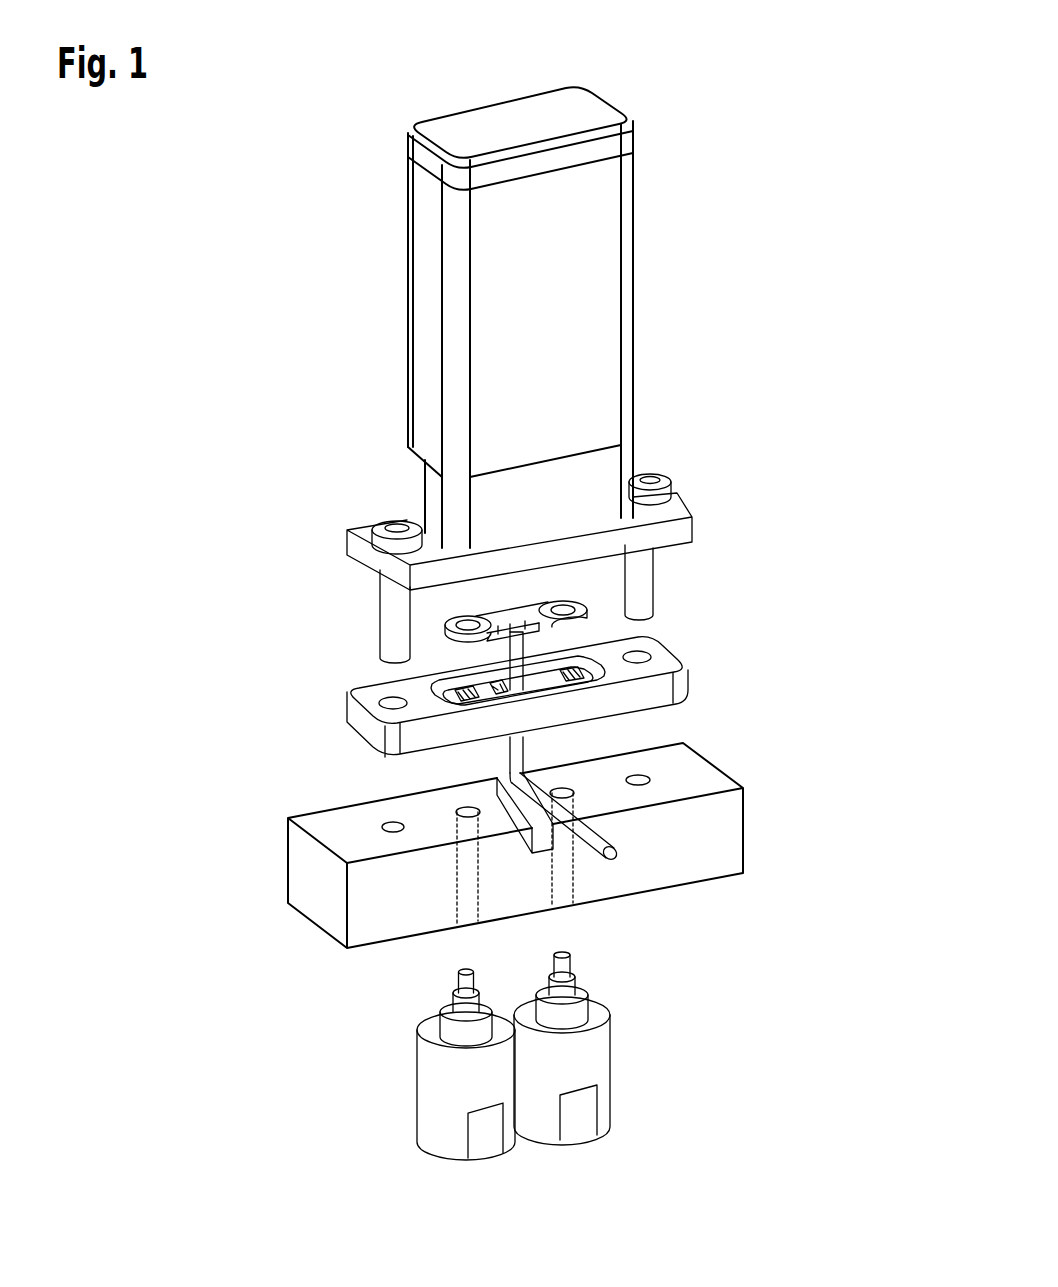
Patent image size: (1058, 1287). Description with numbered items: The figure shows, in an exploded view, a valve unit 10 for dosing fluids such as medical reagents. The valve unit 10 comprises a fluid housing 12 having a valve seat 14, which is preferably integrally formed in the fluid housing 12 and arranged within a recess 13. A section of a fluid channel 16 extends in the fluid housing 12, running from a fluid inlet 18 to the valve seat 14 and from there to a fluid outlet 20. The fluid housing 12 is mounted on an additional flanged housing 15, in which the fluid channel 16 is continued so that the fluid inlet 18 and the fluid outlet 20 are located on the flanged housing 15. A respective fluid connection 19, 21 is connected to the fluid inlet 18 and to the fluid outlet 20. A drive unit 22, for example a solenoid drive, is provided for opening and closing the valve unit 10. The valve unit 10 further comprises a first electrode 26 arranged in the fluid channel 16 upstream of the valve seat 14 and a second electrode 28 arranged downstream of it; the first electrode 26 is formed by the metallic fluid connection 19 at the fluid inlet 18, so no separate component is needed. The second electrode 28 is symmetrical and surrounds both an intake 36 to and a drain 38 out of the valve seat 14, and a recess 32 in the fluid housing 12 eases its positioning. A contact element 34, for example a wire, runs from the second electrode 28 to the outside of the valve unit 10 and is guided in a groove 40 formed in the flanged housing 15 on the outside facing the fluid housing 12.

The valve unit 10 is at (842, 250).
The fluid housing 12 is at (555, 650).
The recess 13 is at (563, 672).
The valve seat 14 is at (470, 675).
The flanged housing 15 is at (482, 872).
The fluid channel 16 is at (467, 867).
The fluid inlet 18 is at (467, 925).
The fluid connection 19 is at (386, 1064).
The fluid outlet 20 is at (563, 908).
The fluid connection 21 is at (570, 1058).
The drive unit 22 is at (593, 298).
The first electrode 26 is at (457, 1065).
The second electrode 28 is at (565, 597).
The recess 32 is at (520, 700).
The contact element 34 is at (547, 802).
The intake 36 is at (440, 670).
The drain 38 is at (505, 697).
The groove 40 is at (497, 790).